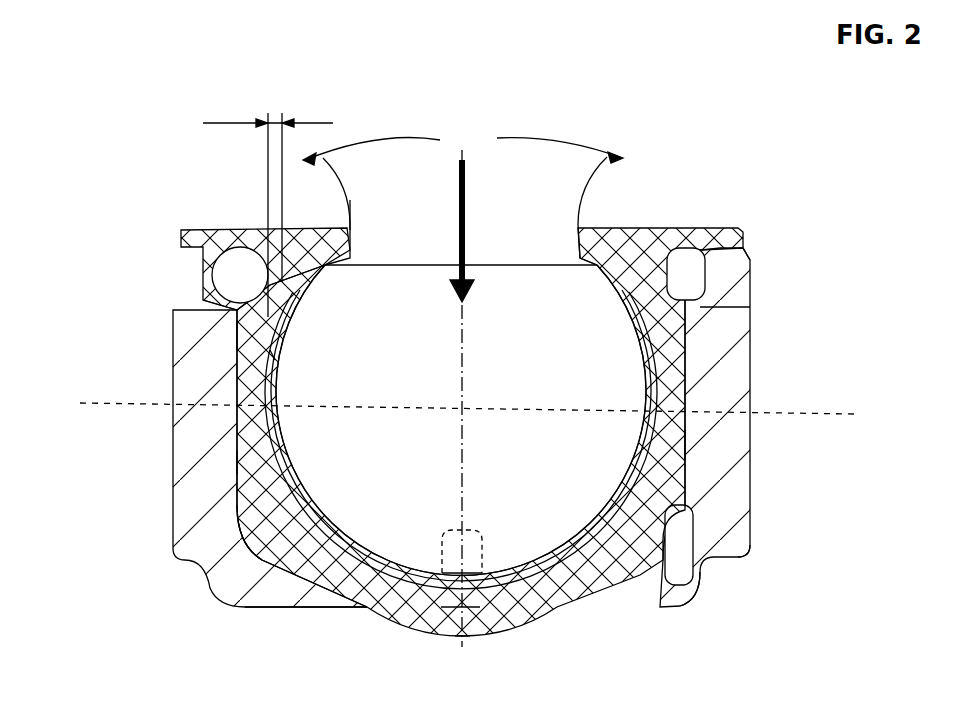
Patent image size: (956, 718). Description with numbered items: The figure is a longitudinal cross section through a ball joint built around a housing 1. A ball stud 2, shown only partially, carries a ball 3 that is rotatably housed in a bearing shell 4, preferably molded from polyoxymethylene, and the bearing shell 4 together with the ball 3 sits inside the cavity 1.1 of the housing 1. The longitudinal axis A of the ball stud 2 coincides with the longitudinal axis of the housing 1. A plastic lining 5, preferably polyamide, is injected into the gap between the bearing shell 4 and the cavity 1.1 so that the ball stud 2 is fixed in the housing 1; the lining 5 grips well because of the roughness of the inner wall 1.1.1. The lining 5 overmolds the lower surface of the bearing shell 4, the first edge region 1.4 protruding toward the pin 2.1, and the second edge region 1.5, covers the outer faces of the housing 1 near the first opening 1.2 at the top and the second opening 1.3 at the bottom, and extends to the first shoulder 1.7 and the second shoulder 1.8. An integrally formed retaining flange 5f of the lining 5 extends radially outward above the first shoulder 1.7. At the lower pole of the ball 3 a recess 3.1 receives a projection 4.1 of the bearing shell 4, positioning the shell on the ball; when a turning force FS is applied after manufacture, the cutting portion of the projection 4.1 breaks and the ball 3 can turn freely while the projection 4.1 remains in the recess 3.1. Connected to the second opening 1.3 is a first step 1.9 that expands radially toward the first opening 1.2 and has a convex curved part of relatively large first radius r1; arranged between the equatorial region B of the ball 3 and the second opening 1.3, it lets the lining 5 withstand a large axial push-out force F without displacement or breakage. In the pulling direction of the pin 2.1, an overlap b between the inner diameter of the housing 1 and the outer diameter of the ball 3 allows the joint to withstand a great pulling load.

The housing 1 is at (735, 405).
The cavity 1.1 is at (250, 335).
The inner wall 1.1.1 is at (270, 355).
The first opening 1.2 is at (245, 305).
The second opening 1.3 is at (282, 607).
The first edge region 1.4 is at (687, 270).
The second edge region 1.5 is at (690, 573).
The first shoulder 1.7 is at (738, 307).
The second shoulder 1.8 is at (755, 563).
The first step 1.9 is at (237, 462).
The ball stud 2 is at (567, 177).
The pin 2.1 is at (387, 213).
The ball 3 is at (560, 333).
The recess 3.1 is at (473, 533).
The bearing shell 4 is at (648, 410).
The projection 4.1 is at (470, 568).
The lining 5 is at (685, 445).
The retaining flange 5f is at (178, 243).
The overlap b is at (268, 207).
The equatorial region B is at (458, 408).
The longitudinal axis A is at (465, 649).
The axial force F is at (465, 398).
The turning force FS is at (463, 142).
The first radius r1 is at (250, 527).